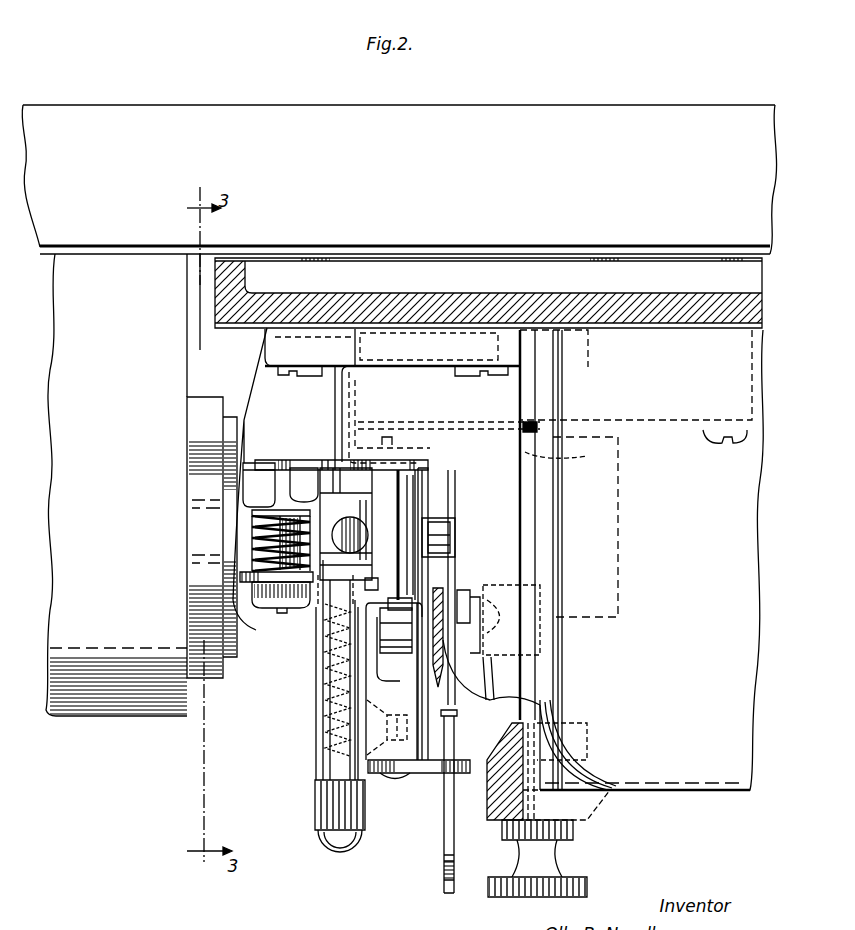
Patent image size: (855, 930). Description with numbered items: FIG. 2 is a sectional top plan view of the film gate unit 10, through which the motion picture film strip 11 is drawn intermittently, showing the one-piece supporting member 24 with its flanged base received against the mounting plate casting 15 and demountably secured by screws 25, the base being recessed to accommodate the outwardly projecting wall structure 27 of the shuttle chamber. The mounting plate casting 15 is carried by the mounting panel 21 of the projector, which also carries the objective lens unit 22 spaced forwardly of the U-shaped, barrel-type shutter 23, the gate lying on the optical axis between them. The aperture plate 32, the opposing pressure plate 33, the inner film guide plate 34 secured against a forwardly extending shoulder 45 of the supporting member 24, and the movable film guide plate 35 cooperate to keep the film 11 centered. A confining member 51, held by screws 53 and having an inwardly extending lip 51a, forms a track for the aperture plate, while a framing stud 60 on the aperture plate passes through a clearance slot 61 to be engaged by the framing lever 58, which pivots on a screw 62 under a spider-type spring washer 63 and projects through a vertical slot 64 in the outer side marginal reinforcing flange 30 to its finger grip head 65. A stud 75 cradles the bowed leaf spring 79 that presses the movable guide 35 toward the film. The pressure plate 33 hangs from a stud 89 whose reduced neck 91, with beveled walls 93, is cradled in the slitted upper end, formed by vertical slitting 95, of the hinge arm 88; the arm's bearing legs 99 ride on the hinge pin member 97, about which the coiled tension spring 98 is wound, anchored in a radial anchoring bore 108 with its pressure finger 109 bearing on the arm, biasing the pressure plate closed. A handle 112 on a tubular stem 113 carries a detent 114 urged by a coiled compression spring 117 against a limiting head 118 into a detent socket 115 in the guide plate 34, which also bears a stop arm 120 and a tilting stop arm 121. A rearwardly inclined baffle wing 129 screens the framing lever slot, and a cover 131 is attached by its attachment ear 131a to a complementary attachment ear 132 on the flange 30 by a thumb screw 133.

The film gate unit 10 is at (293, 701).
The motion picture film strip 11 is at (420, 485).
The mounting plate casting 15 is at (402, 292).
The mounting panel 21 is at (95, 254).
The objective lens unit 22 is at (130, 719).
The barrel-type shutter 23 is at (620, 503).
The supporting member 24 is at (266, 351).
The screws 25 is at (282, 373).
The wall structure 27 is at (752, 392).
The outer side marginal reinforcing flange 30 is at (537, 485).
The aperture plate 32 is at (424, 503).
The pressure plate 33 is at (398, 594).
The inner film guide plate 34 is at (391, 461).
The movable film guide plate 35 is at (382, 618).
The shoulder 45 is at (406, 468).
The confining member 51 is at (400, 759).
The lip 51a is at (378, 650).
The screws 53 is at (393, 728).
The framing lever 58 is at (445, 833).
The framing stud 60 is at (440, 538).
The clearance slot 61 is at (455, 547).
The screw 62 is at (470, 609).
The spider-type spring washer 63 is at (455, 642).
The vertical slot 64 is at (457, 747).
The finger grip head 65 is at (444, 892).
The stud 75 is at (491, 677).
The bowed leaf spring 79 is at (397, 645).
The hinge arm 88 is at (255, 545).
The stud 89 is at (386, 528).
The neck 91 is at (348, 585).
The beveled walls 93 is at (372, 585).
The vertical slitting 95 is at (338, 531).
The hinge pin member 97 is at (255, 515).
The coiled tension spring 98 is at (255, 528).
The bearing legs 99 is at (245, 578).
The radial anchoring bore 108 is at (270, 462).
The pressure finger 109 is at (292, 610).
The handle 112 is at (342, 846).
The tubular stem 113 is at (322, 745).
The detent 114 is at (342, 487).
The detent socket 115 is at (300, 468).
The coiled compression spring 117 is at (322, 668).
The limiting head 118 is at (332, 625).
The stop arm 120 is at (250, 479).
The tilting stop arm 121 is at (325, 468).
The baffle wing 129 is at (493, 696).
The cover 131 is at (708, 770).
The attachment ear 131a is at (588, 807).
The attachment ear 132 is at (555, 721).
The thumb screw 133 is at (492, 896).